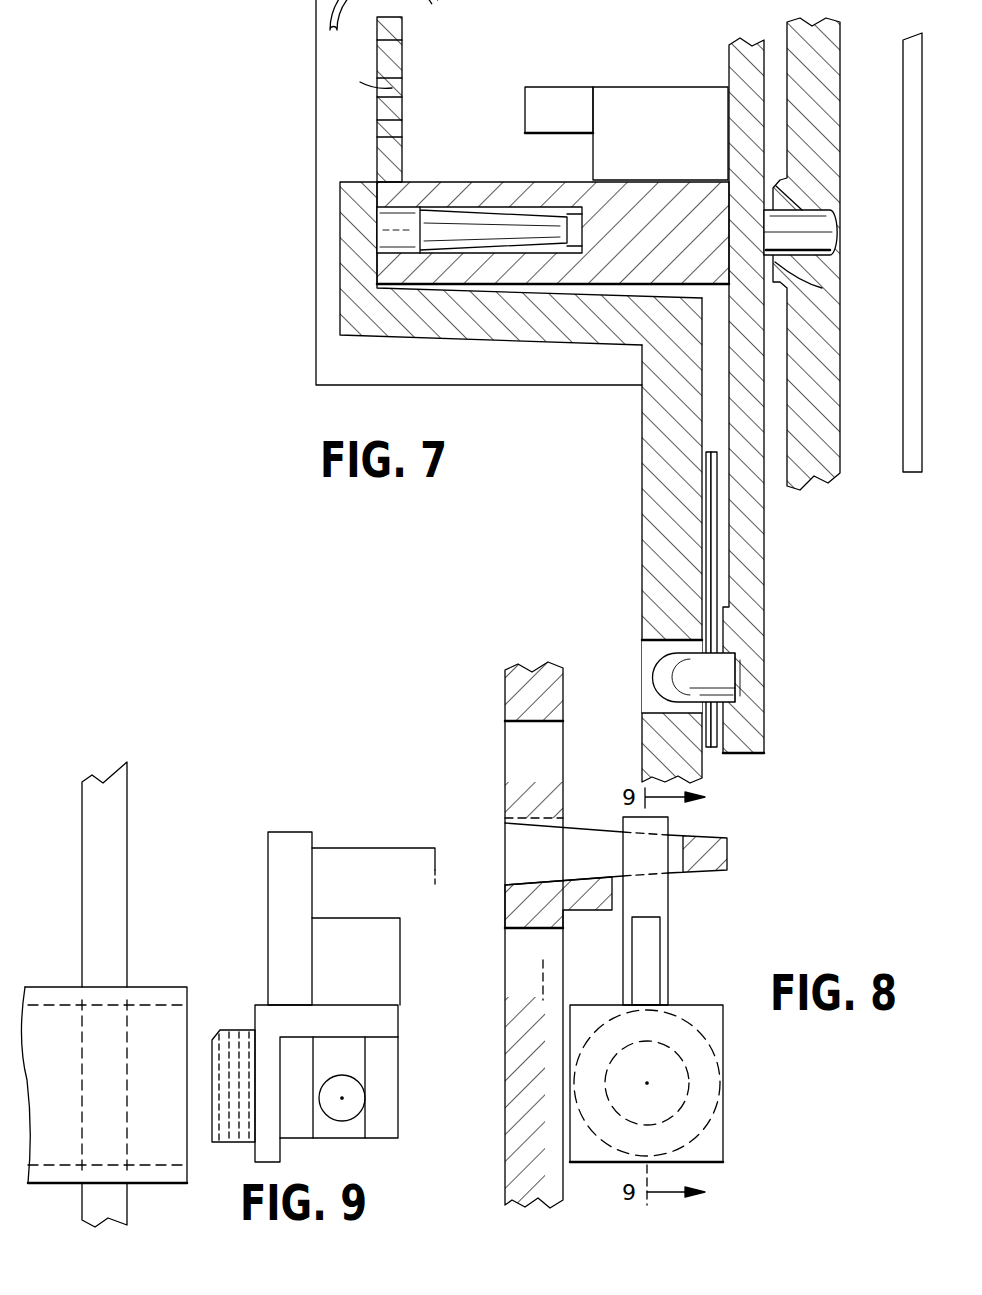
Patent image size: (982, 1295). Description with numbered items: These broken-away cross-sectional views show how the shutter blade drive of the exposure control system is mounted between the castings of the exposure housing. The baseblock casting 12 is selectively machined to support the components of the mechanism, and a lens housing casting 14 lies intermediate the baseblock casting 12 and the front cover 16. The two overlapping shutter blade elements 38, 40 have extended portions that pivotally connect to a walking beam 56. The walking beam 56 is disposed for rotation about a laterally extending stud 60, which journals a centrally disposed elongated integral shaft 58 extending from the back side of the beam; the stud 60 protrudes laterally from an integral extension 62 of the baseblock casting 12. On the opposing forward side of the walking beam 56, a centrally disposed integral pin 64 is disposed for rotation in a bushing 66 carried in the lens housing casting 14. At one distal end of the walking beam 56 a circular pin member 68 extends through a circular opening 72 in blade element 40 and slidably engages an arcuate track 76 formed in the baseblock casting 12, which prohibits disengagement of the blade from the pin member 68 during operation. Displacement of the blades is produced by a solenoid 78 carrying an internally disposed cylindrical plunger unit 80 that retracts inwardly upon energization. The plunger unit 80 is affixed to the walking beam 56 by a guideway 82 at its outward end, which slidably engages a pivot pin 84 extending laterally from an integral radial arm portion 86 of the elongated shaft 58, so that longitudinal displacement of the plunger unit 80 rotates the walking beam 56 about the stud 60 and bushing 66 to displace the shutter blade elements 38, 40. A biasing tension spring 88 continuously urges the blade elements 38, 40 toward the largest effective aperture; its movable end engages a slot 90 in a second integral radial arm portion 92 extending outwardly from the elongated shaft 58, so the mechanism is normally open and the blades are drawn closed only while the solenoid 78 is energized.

In FIG. 7, the baseblock casting 12 is at (642, 440).
In FIG. 8, the baseblock casting 12 is at (505, 958).
In FIG. 7, the lens housing casting 14 is at (841, 455).
In FIG. 7, the cover 16 is at (903, 394).
In FIG. 7, the shutter blade element 38 is at (706, 524).
In FIG. 7, the shutter blade element 40 is at (718, 556).
In FIG. 7, the walking beam 56 is at (764, 612).
In FIG. 7, the elongated shaft 58 is at (560, 286).
In FIG. 7, the stud 60 is at (458, 213).
In FIG. 7, the integral extension 62 is at (340, 270).
In FIG. 7, the pin 64 is at (832, 232).
In FIG. 7, the bushing 66 is at (820, 272).
In FIG. 7, the pin member 68 is at (662, 690).
In FIG. 7, the circular opening 72 is at (752, 678).
In FIG. 7, the arcuate track 76 is at (650, 645).
In FIG. 8, the solenoid 78 is at (688, 1012).
In FIG. 9, the solenoid 78 is at (150, 987).
In FIG. 8, the plunger unit 80 is at (668, 1120).
In FIG. 9, the plunger unit 80 is at (210, 1008).
In FIG. 9, the guideway 82 is at (315, 1130).
In FIG. 7, the pivot pin 84 is at (563, 87).
In FIG. 9, the pivot pin 84 is at (355, 1088).
In FIG. 7, the radial arm portion 86 is at (592, 163).
In FIG. 7, the tension spring 88 is at (447, 26).
In FIG. 7, the slot 90 is at (370, 85).
In FIG. 7, the second radial arm portion 92 is at (376, 110).